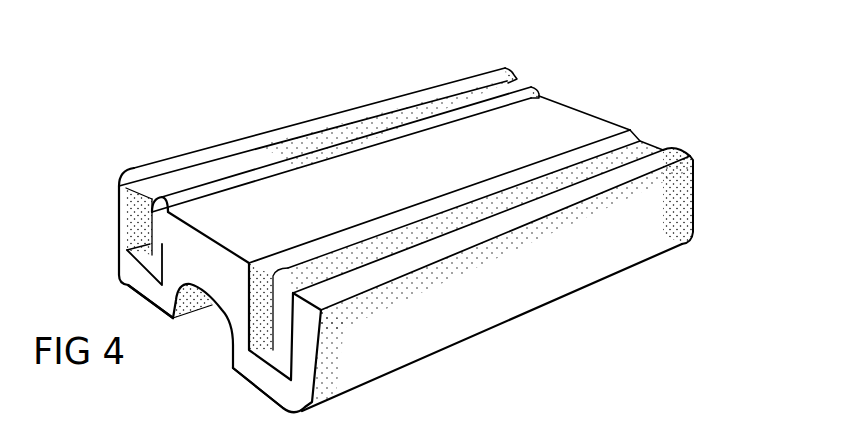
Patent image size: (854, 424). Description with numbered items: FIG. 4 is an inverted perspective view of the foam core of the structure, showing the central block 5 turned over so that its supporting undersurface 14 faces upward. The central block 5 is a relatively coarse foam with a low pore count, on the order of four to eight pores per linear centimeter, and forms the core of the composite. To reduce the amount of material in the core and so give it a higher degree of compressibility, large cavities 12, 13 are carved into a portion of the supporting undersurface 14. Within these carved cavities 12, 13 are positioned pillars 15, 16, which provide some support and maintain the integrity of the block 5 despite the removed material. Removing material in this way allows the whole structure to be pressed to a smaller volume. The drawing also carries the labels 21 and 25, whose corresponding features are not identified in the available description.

The central block 5 is at (415, 214).
The cavity 12 is at (262, 274).
The cavity 13 is at (143, 190).
The supporting undersurface 14 is at (578, 116).
The pillar 15 is at (640, 139).
The pillar 16 is at (292, 154).
The bottom surface 21 is at (492, 334).
The foot 25 is at (397, 354).